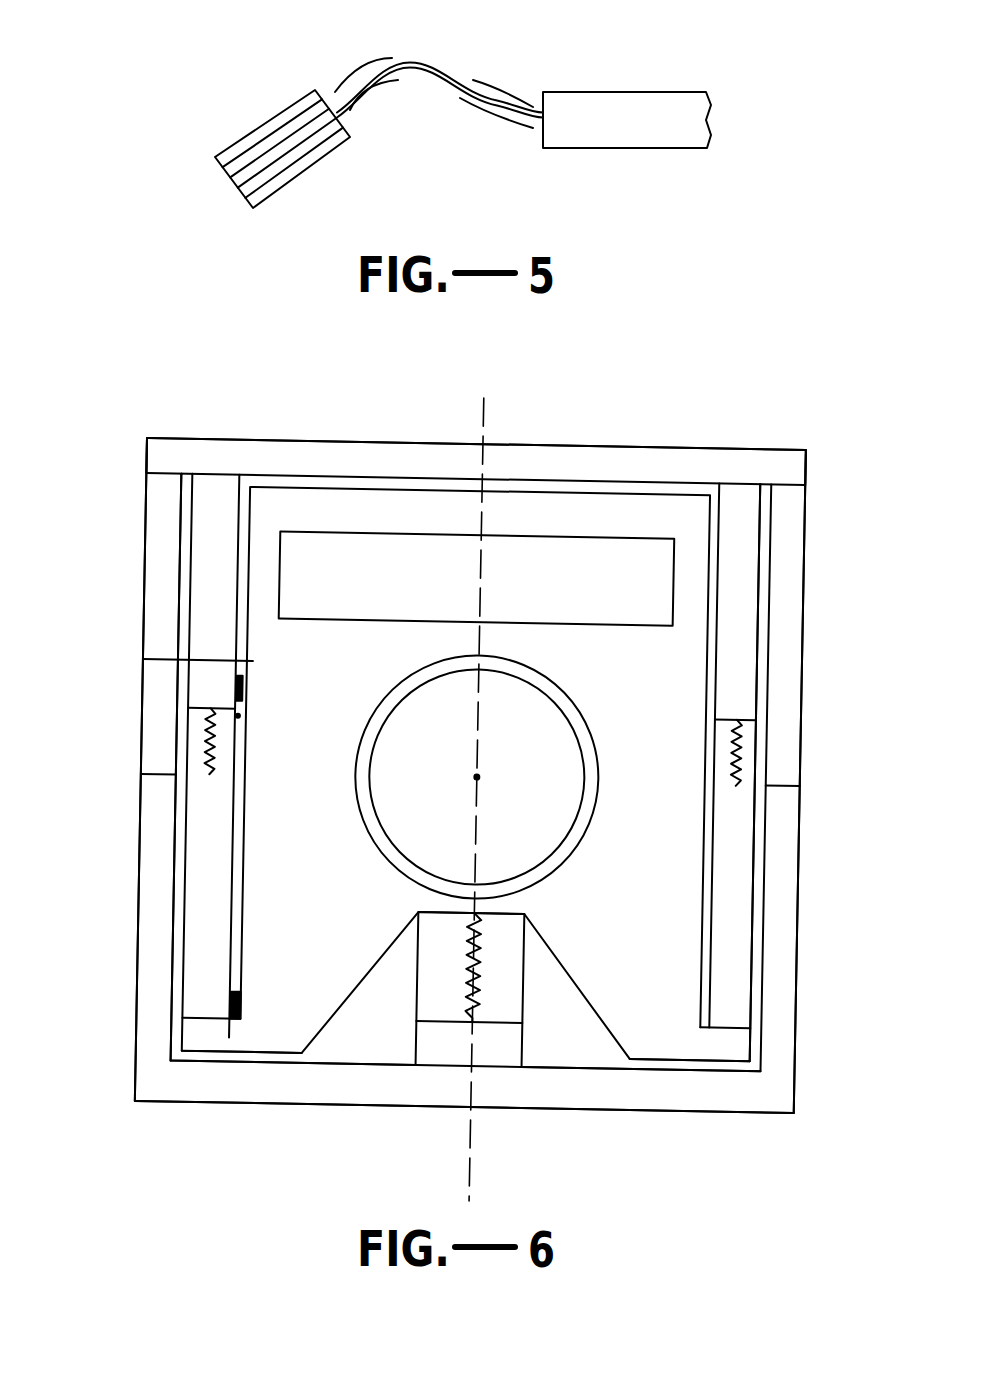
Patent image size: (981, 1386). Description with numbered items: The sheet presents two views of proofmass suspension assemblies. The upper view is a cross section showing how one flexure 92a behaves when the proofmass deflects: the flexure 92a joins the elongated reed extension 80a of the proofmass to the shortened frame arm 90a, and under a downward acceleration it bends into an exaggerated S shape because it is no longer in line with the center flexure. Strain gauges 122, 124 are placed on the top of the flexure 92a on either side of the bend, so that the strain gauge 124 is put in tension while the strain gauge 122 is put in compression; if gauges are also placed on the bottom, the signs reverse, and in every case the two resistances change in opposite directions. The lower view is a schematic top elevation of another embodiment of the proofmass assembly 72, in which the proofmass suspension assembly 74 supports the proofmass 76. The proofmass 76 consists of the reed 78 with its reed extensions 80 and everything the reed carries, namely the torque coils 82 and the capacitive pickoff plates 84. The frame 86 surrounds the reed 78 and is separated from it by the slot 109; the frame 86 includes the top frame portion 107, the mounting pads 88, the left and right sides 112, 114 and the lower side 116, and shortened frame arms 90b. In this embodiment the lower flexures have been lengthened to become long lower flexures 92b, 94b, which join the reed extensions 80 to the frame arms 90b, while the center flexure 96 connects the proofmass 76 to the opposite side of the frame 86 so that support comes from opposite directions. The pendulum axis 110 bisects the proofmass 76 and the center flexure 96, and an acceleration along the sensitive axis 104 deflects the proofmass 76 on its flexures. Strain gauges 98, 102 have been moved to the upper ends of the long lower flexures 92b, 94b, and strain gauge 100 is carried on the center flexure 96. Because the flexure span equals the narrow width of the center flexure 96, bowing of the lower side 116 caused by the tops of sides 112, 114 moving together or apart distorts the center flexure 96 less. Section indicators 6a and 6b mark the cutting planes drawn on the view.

In FIG. 5, the reed extension 80a is at (262, 130).
In FIG. 5, the flexure 92a is at (432, 63).
In FIG. 5, the strain gauge 122 is at (500, 97).
In FIG. 5, the strain gauge 124 is at (363, 65).
In FIG. 5, the frame arm 90a is at (660, 97).
In FIG. 6, the proofmass assembly 72 is at (139, 360).
In FIG. 6, the proofmass suspension assembly 74 is at (129, 400).
In FIG. 6, the proofmass 76 is at (120, 450).
In FIG. 6, the frame 86 is at (427, 403).
In FIG. 6, the top frame portion 107 is at (355, 448).
In FIG. 6, the pendulum axis 110 is at (486, 402).
In FIG. 6, the slot 109 is at (603, 479).
In FIG. 6, the mounting pad 88 is at (152, 575).
In FIG. 6, the frame arm 90b is at (202, 631).
In FIG. 6, the reed 78 is at (154, 660).
In FIG. 6, the section line 6b is at (244, 676).
In FIG. 6, the strain gauge 98 is at (209, 747).
In FIG. 6, the left side of frame 112 is at (160, 898).
In FIG. 6, the long lower flexure 92b is at (206, 957).
In FIG. 6, the reed extension 80 is at (219, 1046).
In FIG. 6, the capacitive pickoff plate 84 is at (601, 615).
In FIG. 6, the sensitive axis 104 is at (483, 771).
In FIG. 6, the torque coil 82 is at (577, 839).
In FIG. 6, the section line 6a is at (561, 930).
In FIG. 6, the center flexure 96 is at (427, 963).
In FIG. 6, the strain gauge 100 is at (473, 976).
In FIG. 6, the lower side of frame 116 is at (604, 1102).
In FIG. 6, the strain gauge 102 is at (746, 739).
In FIG. 6, the right side of frame 114 is at (798, 888).
In FIG. 6, the long lower flexure 94b is at (747, 942).